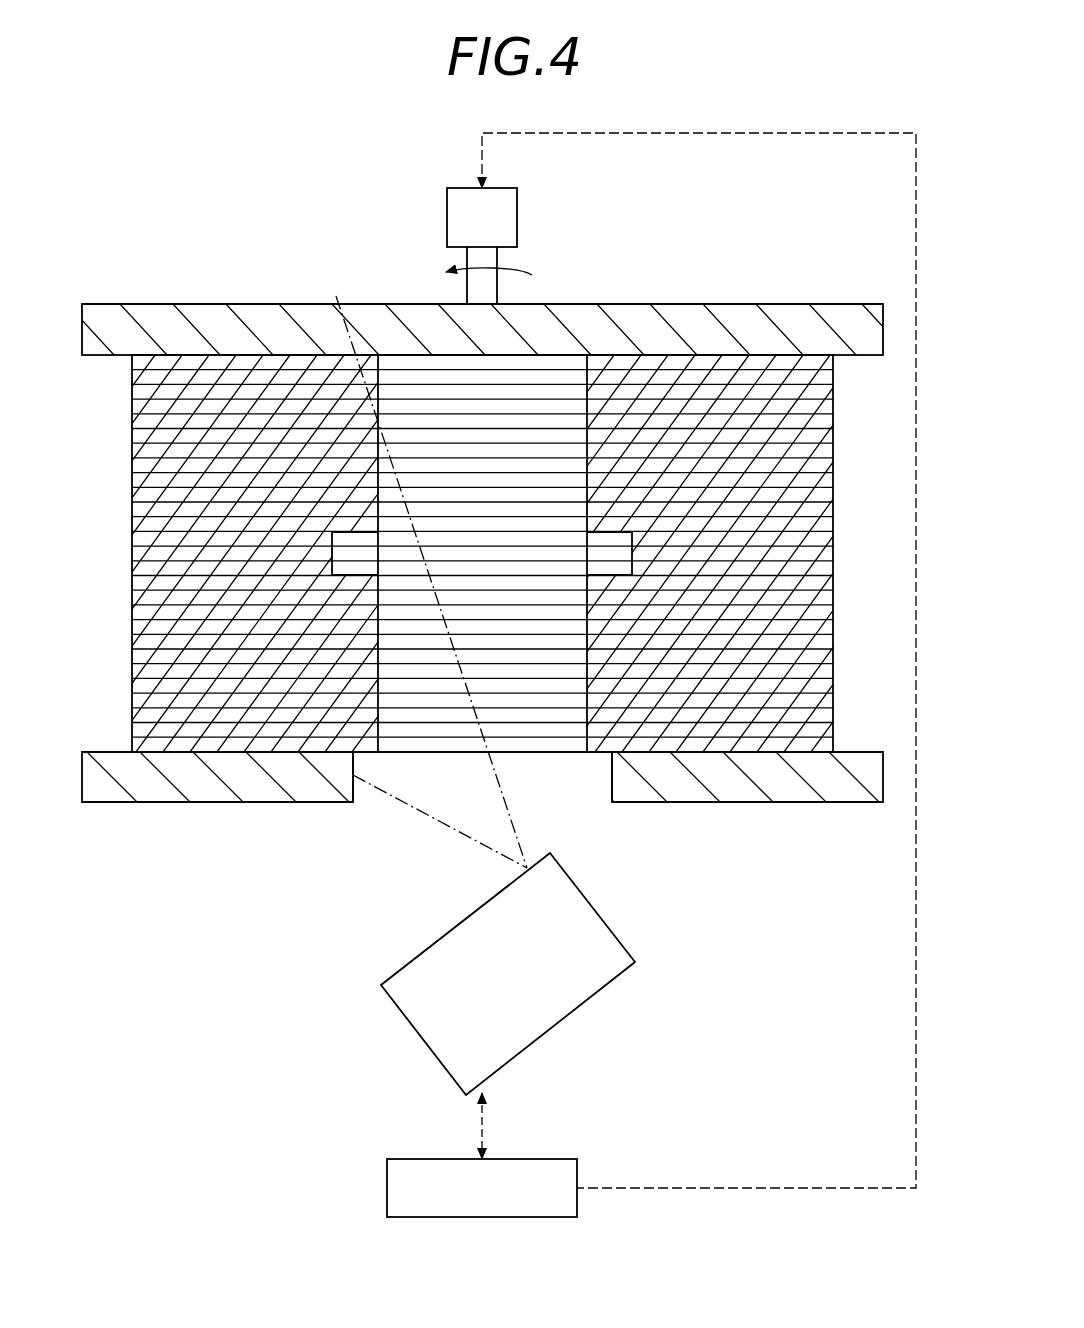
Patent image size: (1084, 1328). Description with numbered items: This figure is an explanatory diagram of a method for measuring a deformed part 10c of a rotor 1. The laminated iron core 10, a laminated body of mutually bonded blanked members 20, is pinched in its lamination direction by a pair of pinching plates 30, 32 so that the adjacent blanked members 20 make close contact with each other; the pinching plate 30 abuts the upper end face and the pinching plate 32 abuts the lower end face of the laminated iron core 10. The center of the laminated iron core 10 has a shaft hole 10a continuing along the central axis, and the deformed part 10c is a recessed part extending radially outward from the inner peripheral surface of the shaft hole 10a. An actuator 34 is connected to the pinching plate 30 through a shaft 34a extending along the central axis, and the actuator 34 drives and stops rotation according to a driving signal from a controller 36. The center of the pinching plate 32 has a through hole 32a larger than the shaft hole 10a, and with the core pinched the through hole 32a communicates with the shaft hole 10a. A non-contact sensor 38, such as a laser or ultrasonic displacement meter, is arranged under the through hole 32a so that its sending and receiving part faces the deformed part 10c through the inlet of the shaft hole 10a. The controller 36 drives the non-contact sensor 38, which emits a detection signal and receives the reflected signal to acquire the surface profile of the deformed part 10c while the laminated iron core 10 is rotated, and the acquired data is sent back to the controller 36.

The rotor 1 is at (858, 508).
The laminated iron core 10 is at (542, 544).
The shaft hole 10a is at (556, 328).
The deformed part 10c is at (378, 534).
The blanked member 20 is at (760, 746).
The pinching plate 30 is at (849, 321).
The pinching plate 32 is at (850, 790).
The through hole 32a is at (612, 778).
The actuator 34 is at (517, 215).
The shaft 34a is at (467, 262).
The controller 36 is at (387, 1188).
The non-contact sensor 38 is at (547, 1037).